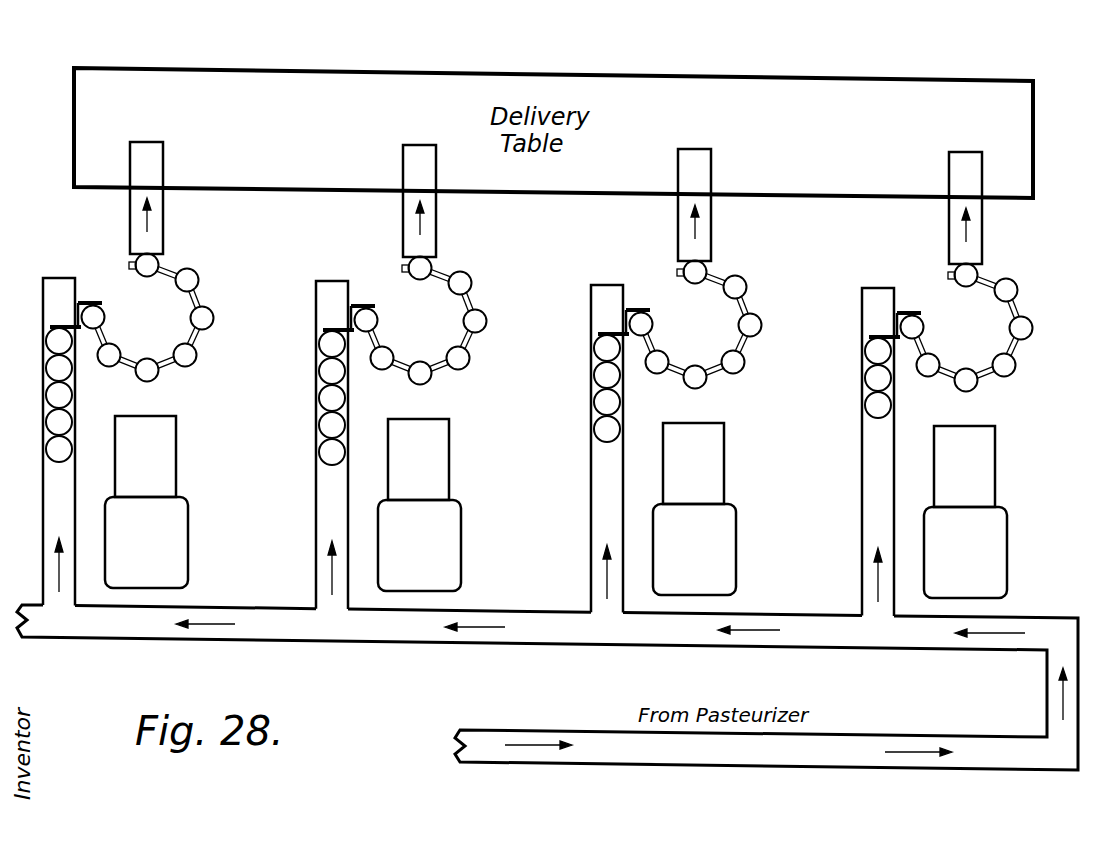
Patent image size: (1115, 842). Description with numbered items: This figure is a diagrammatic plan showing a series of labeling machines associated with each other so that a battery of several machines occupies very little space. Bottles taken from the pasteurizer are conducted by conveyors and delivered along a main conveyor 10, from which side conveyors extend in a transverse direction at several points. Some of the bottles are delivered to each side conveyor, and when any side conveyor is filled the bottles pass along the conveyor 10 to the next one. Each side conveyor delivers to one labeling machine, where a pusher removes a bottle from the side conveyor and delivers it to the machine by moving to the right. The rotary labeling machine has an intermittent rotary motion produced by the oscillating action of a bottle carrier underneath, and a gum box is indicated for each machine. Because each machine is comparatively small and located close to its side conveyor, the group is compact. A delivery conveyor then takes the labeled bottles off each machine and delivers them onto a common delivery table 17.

The conveyor 10 is at (117, 628).
The delivery table 17 is at (843, 193).